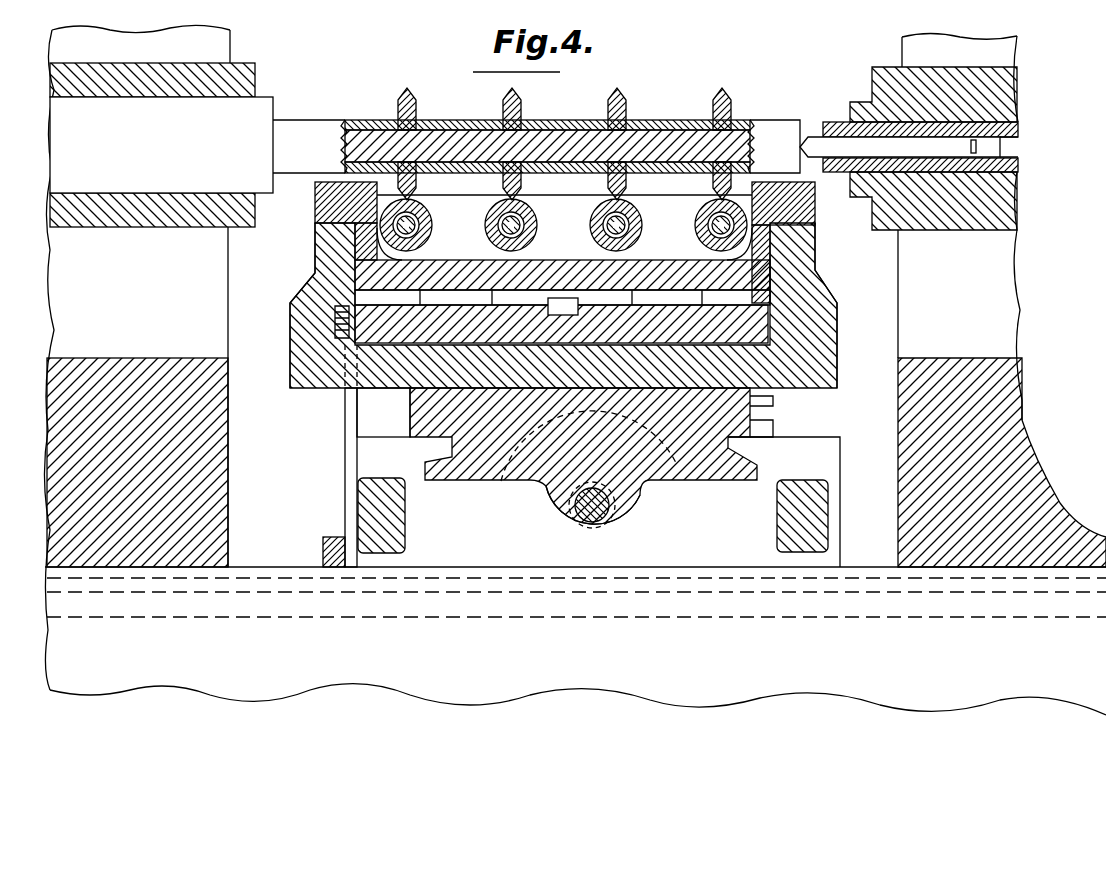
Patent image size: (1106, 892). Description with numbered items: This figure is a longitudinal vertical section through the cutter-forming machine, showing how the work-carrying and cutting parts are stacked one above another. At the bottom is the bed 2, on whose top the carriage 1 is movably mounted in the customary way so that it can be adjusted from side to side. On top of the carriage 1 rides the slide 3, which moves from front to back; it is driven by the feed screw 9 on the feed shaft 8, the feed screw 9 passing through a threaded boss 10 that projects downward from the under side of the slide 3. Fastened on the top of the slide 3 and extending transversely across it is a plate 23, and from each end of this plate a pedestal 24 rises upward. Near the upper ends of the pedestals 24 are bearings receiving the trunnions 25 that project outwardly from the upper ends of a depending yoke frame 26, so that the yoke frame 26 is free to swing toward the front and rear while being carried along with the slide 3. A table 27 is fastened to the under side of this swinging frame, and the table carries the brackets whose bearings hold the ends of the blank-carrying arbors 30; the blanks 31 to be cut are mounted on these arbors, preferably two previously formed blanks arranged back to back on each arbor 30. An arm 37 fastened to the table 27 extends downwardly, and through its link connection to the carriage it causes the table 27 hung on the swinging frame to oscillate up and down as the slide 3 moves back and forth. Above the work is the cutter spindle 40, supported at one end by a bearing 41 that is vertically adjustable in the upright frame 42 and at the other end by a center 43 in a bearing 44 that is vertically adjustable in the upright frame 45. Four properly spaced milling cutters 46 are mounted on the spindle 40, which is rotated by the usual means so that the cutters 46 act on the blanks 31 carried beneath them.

The carriage 1 is at (593, 515).
The bed 2 is at (576, 622).
The slide 3 is at (462, 482).
The feed shaft 8 is at (612, 505).
The feed screw 9 is at (612, 516).
The threaded boss 10 is at (606, 546).
The plate 23 is at (795, 395).
The pedestal 24 is at (313, 270).
The trunnions 25 is at (322, 210).
The yoke frame 26 is at (590, 262).
The table 27 is at (773, 322).
The blank-carrying arbors 30 is at (428, 218).
The blanks 31 is at (425, 238).
The arm 37 is at (350, 461).
The cutter spindle 40 is at (425, 145).
The bearing 41 is at (254, 82).
The upright frame 42 is at (214, 426).
The center 43 is at (830, 142).
The bearing 44 is at (1020, 100).
The upright frame 45 is at (1002, 450).
The milling cutters 46 is at (500, 106).